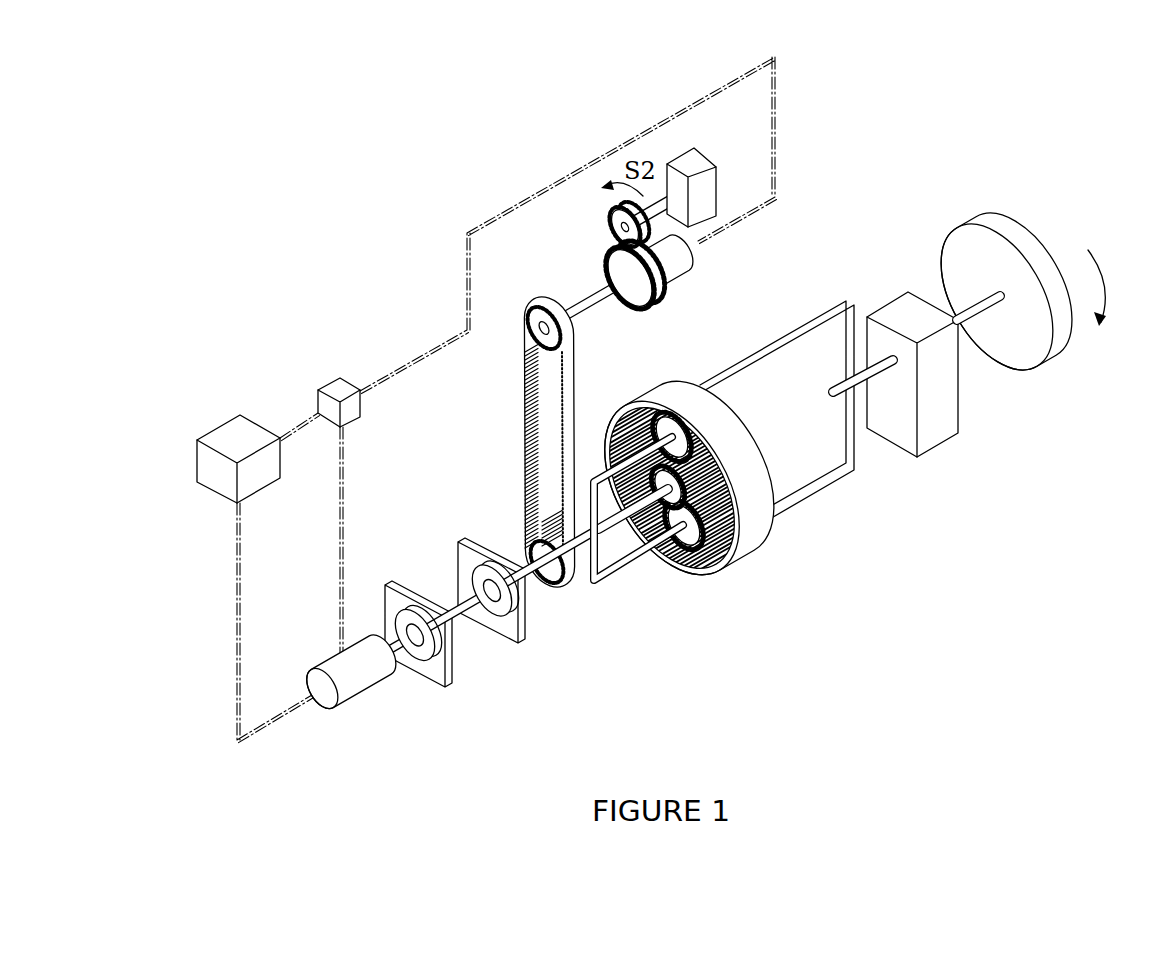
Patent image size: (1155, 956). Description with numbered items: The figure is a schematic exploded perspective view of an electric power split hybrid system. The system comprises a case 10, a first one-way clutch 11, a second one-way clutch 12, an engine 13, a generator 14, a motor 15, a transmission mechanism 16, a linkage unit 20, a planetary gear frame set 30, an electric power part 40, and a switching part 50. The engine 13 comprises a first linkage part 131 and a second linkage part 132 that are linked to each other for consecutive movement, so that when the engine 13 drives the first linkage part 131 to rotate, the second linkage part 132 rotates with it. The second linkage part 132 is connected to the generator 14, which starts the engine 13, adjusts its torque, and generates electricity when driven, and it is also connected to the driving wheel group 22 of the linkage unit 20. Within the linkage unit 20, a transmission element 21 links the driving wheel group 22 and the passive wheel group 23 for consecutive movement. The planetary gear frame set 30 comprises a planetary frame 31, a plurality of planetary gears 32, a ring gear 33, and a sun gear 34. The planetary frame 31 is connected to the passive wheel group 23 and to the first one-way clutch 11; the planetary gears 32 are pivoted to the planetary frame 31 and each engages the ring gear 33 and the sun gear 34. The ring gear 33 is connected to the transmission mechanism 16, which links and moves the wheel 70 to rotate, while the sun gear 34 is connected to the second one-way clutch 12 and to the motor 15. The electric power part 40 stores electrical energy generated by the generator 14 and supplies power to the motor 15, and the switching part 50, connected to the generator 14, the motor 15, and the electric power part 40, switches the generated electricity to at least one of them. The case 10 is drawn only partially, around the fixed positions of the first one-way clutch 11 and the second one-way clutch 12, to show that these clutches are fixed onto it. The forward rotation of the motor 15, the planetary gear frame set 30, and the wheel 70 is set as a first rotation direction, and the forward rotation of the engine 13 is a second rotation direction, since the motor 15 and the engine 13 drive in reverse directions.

The case 10 is at (385, 584).
The first one-way clutch 11 is at (494, 613).
The second one-way clutch 12 is at (419, 650).
The engine 13 is at (687, 160).
The first linkage part 131 is at (603, 212).
The second linkage part 132 is at (666, 302).
The generator 14 is at (683, 262).
The motor 15 is at (357, 690).
The transmission mechanism 16 is at (946, 432).
The linkage unit 20 is at (510, 401).
The transmission element 21 is at (527, 398).
The driving wheel group 22 is at (538, 324).
The passive wheel group 23 is at (524, 512).
The planetary gear frame set 30 is at (714, 519).
The planetary frame 31 is at (633, 581).
The planetary gears 32 is at (702, 513).
The ring gear 33 is at (766, 528).
The sun gear 34 is at (668, 500).
The electric power part 40 is at (229, 436).
The switching part 50 is at (336, 386).
The wheel 70 is at (1027, 233).